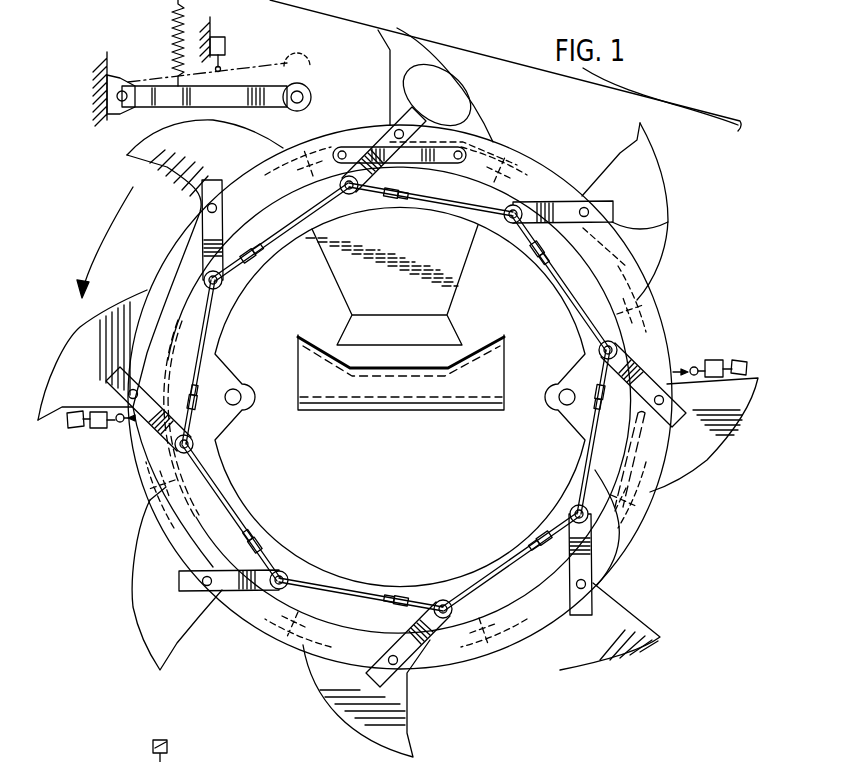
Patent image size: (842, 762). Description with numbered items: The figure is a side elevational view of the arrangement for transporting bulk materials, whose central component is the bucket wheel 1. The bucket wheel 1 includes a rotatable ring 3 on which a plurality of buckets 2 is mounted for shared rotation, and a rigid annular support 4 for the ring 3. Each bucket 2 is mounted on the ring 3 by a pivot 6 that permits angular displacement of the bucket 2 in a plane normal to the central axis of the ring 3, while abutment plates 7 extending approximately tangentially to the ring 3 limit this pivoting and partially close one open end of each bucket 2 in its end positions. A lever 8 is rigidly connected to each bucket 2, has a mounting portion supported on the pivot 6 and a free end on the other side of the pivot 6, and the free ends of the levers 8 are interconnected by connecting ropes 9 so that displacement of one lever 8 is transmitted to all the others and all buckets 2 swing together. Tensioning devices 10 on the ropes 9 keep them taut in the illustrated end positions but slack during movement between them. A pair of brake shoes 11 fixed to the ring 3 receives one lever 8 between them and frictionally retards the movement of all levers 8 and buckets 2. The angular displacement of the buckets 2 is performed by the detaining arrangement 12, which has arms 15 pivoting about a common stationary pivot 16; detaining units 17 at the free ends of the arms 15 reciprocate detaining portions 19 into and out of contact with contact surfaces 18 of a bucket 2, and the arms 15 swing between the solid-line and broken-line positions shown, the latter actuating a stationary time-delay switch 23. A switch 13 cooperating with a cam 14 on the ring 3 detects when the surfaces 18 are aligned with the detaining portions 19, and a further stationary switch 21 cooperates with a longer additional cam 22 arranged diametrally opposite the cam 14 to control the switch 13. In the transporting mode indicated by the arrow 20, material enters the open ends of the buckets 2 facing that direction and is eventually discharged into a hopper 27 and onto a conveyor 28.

The bucket wheel 1 is at (135, 511).
The buckets 2 is at (470, 121).
The rotatable ring 3 is at (648, 337).
The rigid annular support 4 is at (635, 499).
The pivots 6 is at (408, 675).
The abutment plates 7 is at (628, 283).
The lever 8 is at (567, 203).
The connecting ropes 9 is at (243, 530).
The tensioning devices 10 is at (500, 645).
The brake shoes 11 is at (356, 147).
The detaining arrangement 12 is at (255, 62).
The switch 13 is at (712, 365).
The cam 14 is at (628, 482).
The arms 15 is at (240, 88).
The stationary pivot 16 is at (122, 90).
The detaining units 17 is at (298, 90).
The contact surfaces 18 is at (447, 92).
The detaining portions 19 is at (302, 90).
The arrow 20 is at (106, 228).
The switch 21 is at (100, 429).
The cam 22 is at (178, 300).
The time-delay switch 23 is at (218, 37).
The hopper 27 is at (473, 260).
The conveyor 28 is at (486, 410).